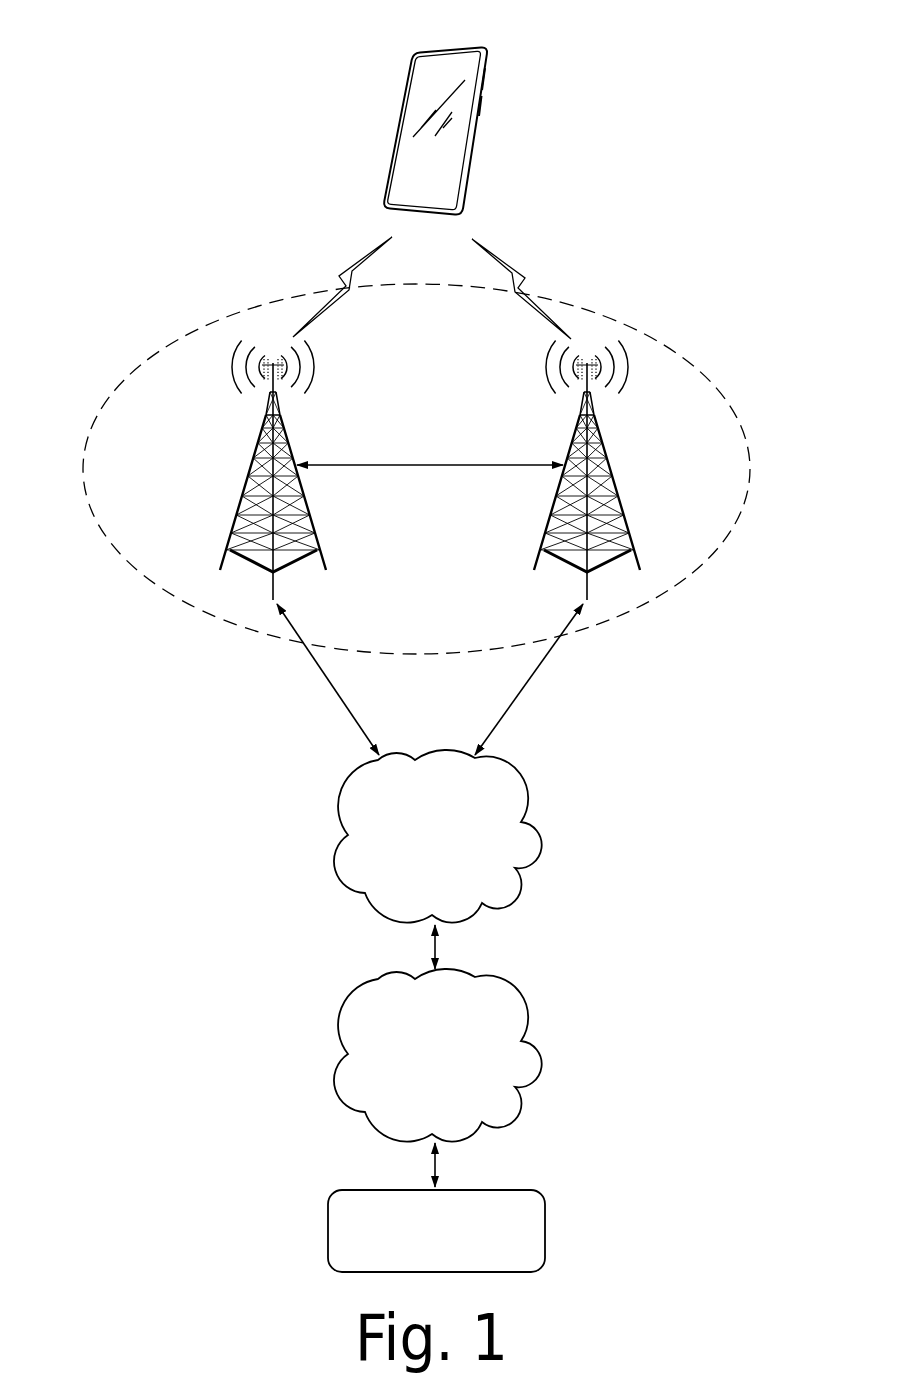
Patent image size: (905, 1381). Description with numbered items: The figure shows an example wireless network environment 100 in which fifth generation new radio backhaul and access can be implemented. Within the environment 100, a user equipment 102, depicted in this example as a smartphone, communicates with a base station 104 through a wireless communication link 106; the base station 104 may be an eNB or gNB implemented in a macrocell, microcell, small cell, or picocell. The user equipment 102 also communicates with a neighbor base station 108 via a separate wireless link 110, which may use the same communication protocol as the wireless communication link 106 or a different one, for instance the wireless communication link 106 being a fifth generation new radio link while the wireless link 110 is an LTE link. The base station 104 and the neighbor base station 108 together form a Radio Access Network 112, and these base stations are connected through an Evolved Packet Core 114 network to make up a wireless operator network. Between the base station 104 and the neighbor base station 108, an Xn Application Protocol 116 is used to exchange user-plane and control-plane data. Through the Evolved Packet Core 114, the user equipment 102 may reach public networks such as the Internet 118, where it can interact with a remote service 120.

The environment 100 is at (132, 38).
The user equipment 102 is at (499, 70).
The base station 104 is at (254, 446).
The wireless communication link 106 is at (346, 266).
The neighbor base station 108 is at (605, 446).
The wireless link 110 is at (522, 266).
The Radio Access Network 112 is at (728, 390).
The Evolved Packet Core 114 is at (417, 882).
The Xn Application Protocol 116 is at (403, 456).
The Internet 118 is at (417, 1073).
The remote service 120 is at (417, 1255).